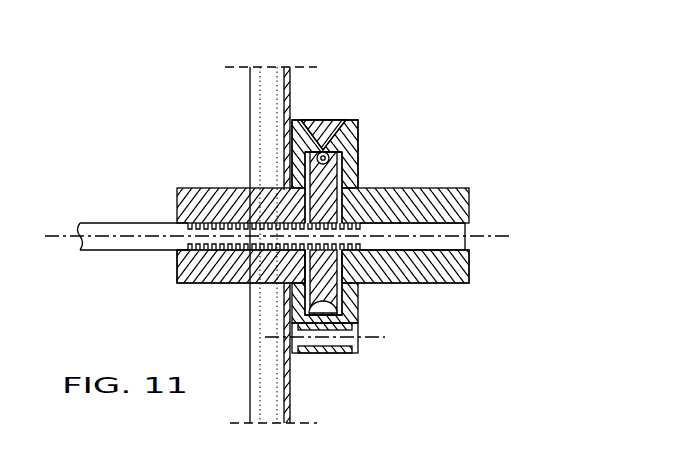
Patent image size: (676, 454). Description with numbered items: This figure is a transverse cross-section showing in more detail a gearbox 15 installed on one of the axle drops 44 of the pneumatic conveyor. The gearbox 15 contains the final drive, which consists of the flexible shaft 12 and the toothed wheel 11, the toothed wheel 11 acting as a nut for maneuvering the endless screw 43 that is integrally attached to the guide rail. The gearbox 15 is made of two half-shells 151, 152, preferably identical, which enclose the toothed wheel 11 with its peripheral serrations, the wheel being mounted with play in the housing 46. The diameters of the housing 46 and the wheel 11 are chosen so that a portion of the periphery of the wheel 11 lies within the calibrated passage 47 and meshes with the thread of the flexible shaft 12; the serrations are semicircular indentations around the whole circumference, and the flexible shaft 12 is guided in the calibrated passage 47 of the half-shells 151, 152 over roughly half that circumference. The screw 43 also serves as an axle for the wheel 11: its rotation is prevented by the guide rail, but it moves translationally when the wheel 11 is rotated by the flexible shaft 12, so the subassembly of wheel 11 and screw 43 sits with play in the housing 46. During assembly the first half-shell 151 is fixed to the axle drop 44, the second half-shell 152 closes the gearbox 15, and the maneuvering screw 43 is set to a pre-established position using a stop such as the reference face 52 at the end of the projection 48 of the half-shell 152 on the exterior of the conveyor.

The toothed wheel 11 is at (337, 302).
The flexible shaft 12 is at (330, 156).
The gearbox 15 is at (365, 119).
The endless screw 43 is at (110, 232).
The axle drop 44 is at (268, 102).
The housing 46 is at (331, 183).
The calibrated passage 47 is at (324, 148).
The projection 48 is at (215, 277).
The reference face 52 is at (472, 202).
The half-shell 151 is at (173, 284).
The half-shell 152 is at (474, 284).